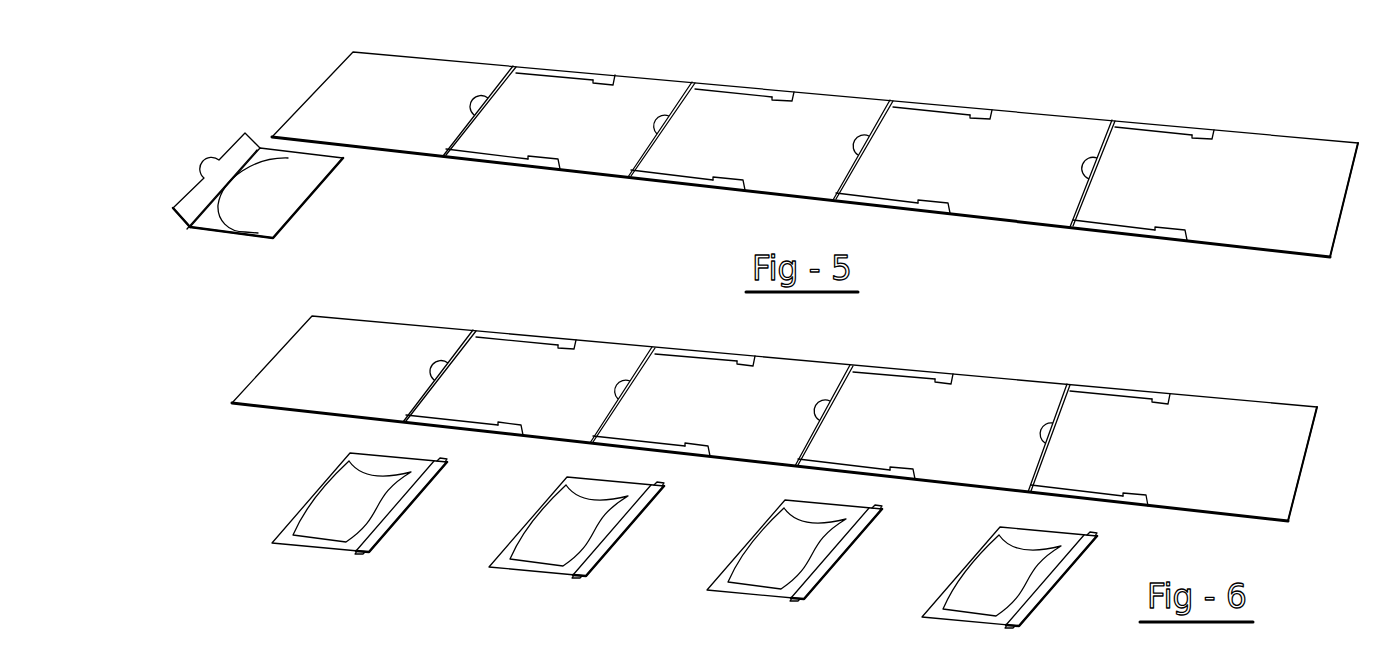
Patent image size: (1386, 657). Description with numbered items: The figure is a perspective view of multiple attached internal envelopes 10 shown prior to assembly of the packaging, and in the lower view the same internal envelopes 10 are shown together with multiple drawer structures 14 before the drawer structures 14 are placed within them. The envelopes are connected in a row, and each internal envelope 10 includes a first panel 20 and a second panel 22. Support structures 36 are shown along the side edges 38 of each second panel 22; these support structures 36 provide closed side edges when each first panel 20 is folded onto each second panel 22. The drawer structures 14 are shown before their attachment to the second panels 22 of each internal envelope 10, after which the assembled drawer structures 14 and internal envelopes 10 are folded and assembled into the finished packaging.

In FIG. 5, the internal envelope 10 is at (490, 60).
In FIG. 5, the drawer structure 14 is at (312, 218).
In FIG. 6, the drawer structure 14 is at (484, 553).
In FIG. 5, the first panel 20 is at (381, 114).
In FIG. 6, the first panel 20 is at (338, 380).
In FIG. 5, the second panel 22 is at (557, 68).
In FIG. 6, the second panel 22 is at (517, 335).
In FIG. 5, the support structure 36 is at (585, 78).
In FIG. 6, the support structure 36 is at (480, 656).
In FIG. 5, the side edge 38 is at (478, 160).